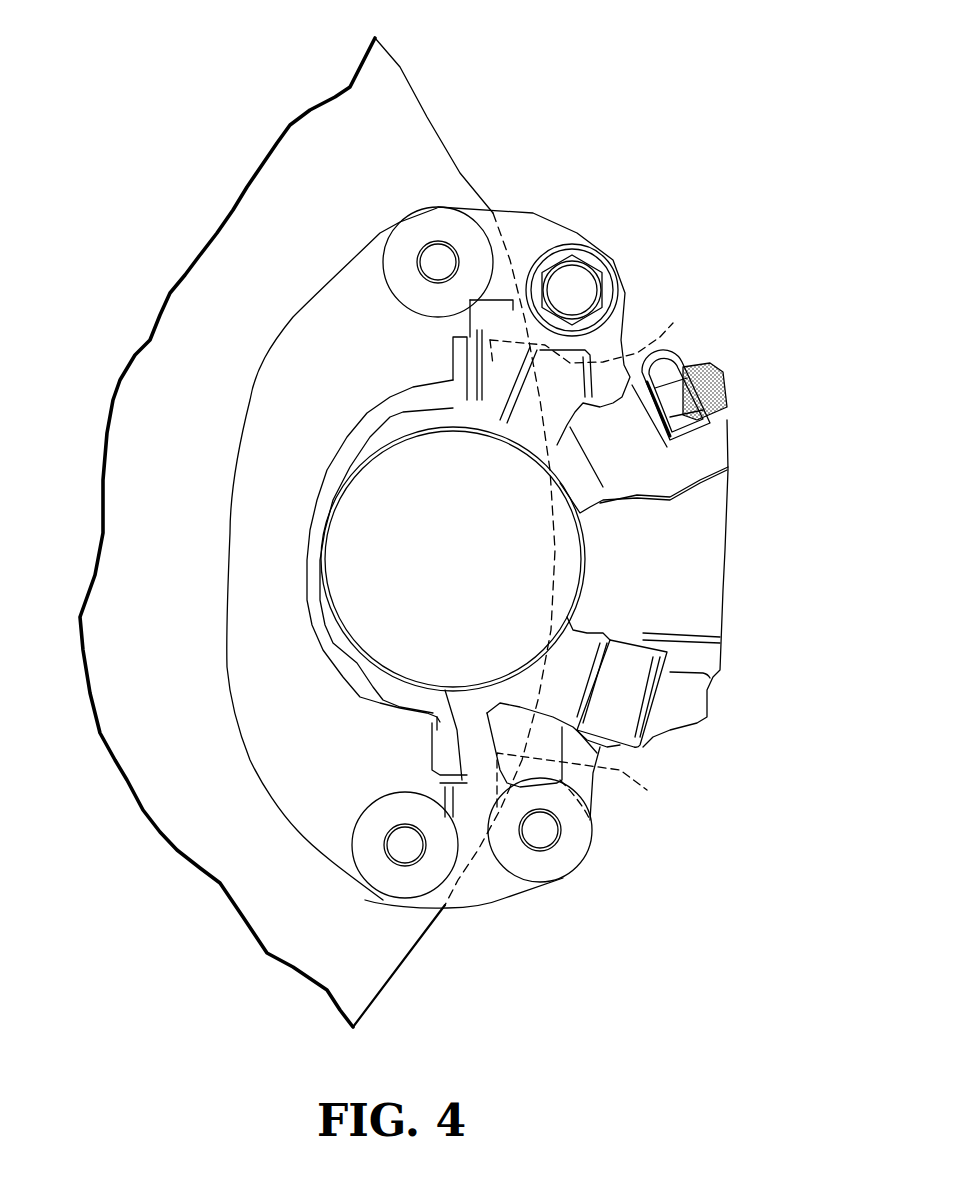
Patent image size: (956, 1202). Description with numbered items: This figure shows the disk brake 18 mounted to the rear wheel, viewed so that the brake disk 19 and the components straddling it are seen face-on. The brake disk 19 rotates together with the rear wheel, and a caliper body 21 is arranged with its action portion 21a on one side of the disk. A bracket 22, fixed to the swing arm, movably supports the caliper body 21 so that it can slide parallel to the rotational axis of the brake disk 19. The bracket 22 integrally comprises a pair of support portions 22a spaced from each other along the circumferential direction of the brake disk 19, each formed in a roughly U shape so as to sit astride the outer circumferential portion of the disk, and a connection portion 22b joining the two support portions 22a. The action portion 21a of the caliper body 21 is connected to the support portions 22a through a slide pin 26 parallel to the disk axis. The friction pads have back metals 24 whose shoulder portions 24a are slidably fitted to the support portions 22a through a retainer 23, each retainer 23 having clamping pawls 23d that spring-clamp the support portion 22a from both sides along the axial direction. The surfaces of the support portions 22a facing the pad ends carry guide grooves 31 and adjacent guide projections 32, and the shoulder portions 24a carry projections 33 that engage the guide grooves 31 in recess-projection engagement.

The disk brake 18 is at (472, 145).
The brake disk 19 is at (410, 93).
The caliper body 21 is at (740, 549).
The action portion 21a is at (358, 612).
The bracket 22 is at (243, 763).
The support portion 22a is at (530, 220).
The connection portion 22b is at (240, 590).
The retainer 23 is at (450, 383).
The clamping pawl 23d is at (463, 423).
The back metal 24 is at (400, 427).
The shoulder portion 24a is at (463, 423).
The slide pin 26 is at (540, 833).
The guide groove 31 is at (545, 290).
The guide projection 32 is at (592, 559).
The projection 33 is at (572, 290).